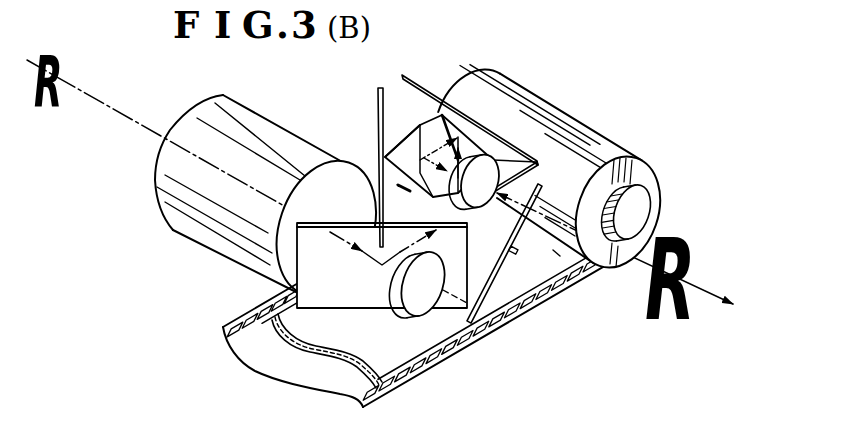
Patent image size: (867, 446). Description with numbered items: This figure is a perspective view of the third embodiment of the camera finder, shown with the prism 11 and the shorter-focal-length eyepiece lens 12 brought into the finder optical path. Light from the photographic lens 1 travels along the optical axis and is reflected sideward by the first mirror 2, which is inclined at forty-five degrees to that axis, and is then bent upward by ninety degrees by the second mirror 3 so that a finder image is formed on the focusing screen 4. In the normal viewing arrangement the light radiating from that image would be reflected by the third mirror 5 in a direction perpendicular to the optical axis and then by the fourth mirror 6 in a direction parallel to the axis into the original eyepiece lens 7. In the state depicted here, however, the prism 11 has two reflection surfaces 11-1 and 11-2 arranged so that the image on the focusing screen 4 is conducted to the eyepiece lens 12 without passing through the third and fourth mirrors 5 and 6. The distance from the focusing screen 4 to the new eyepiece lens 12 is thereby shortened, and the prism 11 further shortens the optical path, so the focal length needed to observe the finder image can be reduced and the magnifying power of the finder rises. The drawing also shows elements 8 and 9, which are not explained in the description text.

The photographic lens 1 is at (273, 133).
The first mirror 2 is at (371, 293).
The second mirror 3 is at (502, 303).
The focusing screen 4 is at (545, 160).
The third mirror 5 is at (437, 92).
The fourth mirror 6 is at (377, 133).
The eyepiece lens 7 is at (405, 297).
The guide bar 8 is at (516, 256).
The film guide 9 is at (554, 253).
The prism 11 is at (420, 124).
The reflection surface 11-1 is at (486, 152).
The reflection surface 11-2 is at (405, 143).
The eyepiece lens 12 is at (488, 200).